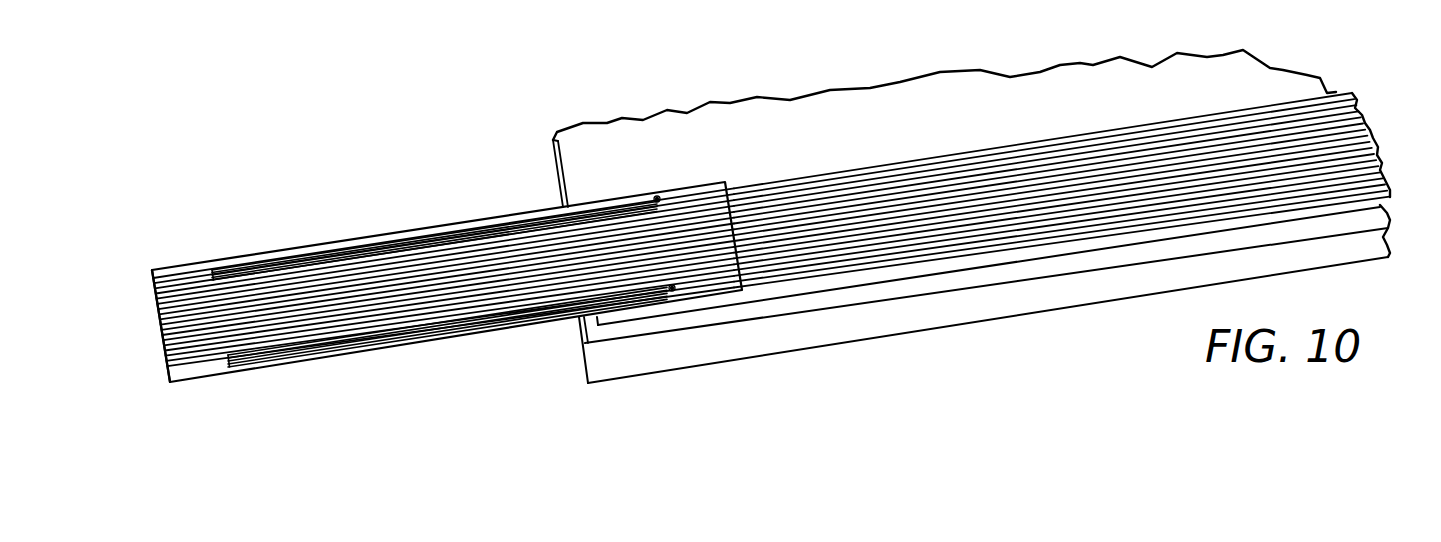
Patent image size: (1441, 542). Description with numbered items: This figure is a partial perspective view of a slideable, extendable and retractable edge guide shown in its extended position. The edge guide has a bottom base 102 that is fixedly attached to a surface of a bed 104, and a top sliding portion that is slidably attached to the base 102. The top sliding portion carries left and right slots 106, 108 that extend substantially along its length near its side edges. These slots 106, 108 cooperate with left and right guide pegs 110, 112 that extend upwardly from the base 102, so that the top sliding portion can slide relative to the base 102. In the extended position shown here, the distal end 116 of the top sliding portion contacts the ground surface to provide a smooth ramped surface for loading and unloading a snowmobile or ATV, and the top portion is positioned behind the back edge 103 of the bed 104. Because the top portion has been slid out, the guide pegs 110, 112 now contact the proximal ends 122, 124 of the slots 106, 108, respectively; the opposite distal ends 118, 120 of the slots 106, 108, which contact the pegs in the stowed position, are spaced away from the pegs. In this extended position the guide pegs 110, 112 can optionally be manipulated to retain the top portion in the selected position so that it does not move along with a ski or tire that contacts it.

The bottom base 102 is at (1245, 180).
The back edge of the bed 103 is at (555, 189).
The bed 104 is at (1210, 97).
The left slot 106 is at (417, 235).
The right slot 108 is at (402, 328).
The left guide peg 110 is at (657, 198).
The right guide peg 112 is at (670, 288).
The distal end 116 is at (157, 317).
The distal end of the left slot 118 is at (224, 357).
The distal end of the right slot 120 is at (212, 270).
The proximal end of the left slot 122 is at (678, 287).
The proximal end of the right slot 124 is at (660, 199).